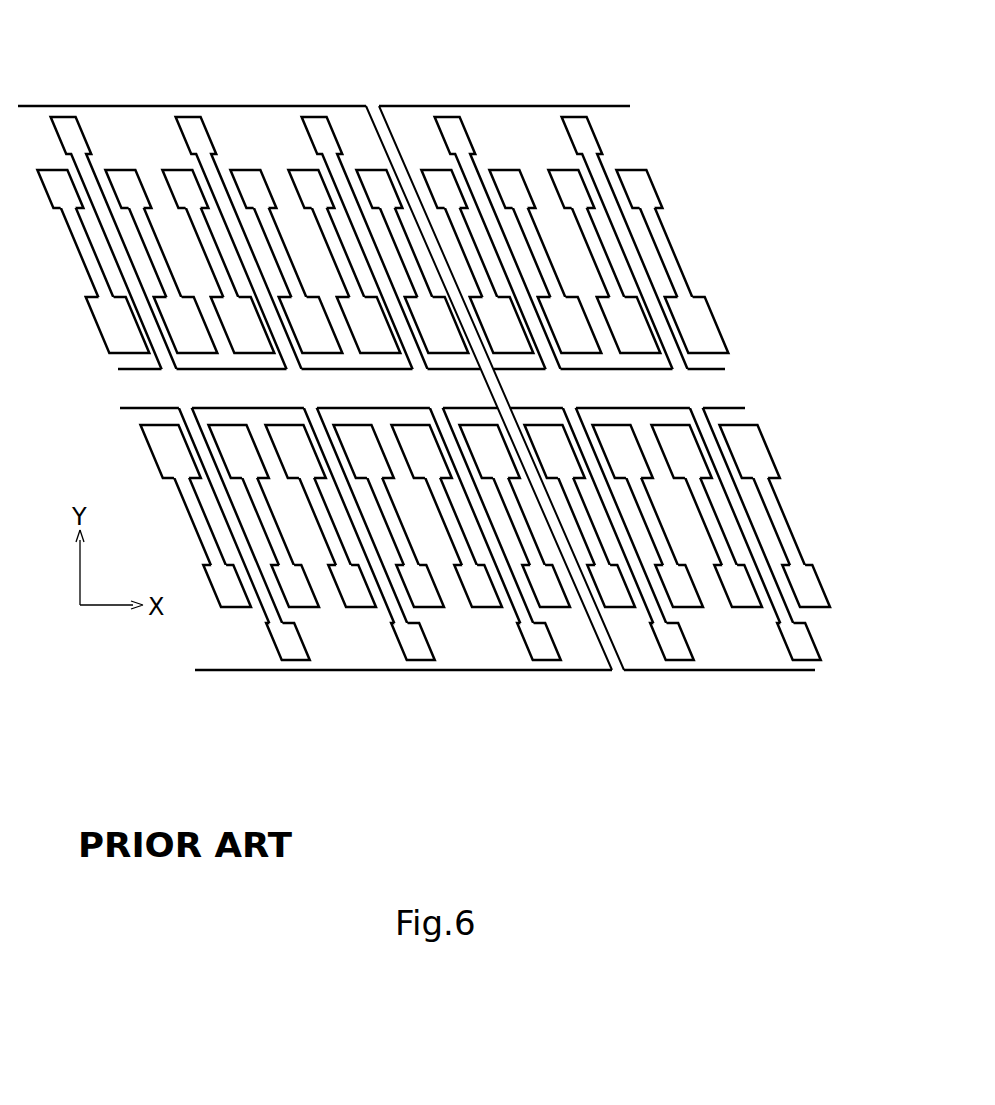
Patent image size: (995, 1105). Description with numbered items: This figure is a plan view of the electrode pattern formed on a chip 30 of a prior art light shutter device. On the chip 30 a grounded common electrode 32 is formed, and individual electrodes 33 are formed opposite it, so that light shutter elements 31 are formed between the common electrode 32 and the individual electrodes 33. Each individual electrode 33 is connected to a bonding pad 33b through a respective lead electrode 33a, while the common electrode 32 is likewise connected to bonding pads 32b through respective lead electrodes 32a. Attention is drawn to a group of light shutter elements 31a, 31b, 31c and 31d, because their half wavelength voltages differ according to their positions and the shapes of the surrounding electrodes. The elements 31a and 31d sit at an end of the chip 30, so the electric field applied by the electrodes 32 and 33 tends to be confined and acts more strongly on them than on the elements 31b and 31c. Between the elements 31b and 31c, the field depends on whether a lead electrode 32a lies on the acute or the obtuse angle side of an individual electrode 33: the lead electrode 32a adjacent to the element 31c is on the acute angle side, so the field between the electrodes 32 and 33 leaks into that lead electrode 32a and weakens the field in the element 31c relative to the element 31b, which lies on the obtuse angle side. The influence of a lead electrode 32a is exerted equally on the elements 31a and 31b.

The chip 30 is at (246, 104).
The light shutter elements 31 is at (123, 366).
The light shutter element 31a is at (470, 417).
The light shutter element 31b is at (405, 418).
The light shutter element 31c is at (378, 362).
The light shutter element 31d is at (447, 362).
The common electrode 32 is at (718, 385).
The lead electrode 32a is at (338, 168).
The bonding pad 32b is at (292, 656).
The individual electrode 33 is at (113, 322).
The lead electrode 33a is at (672, 258).
The bonding pad 33b is at (643, 188).